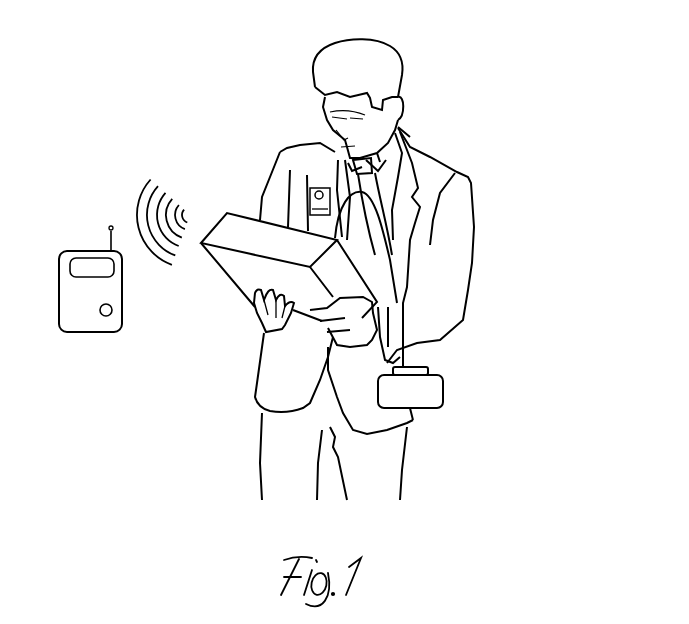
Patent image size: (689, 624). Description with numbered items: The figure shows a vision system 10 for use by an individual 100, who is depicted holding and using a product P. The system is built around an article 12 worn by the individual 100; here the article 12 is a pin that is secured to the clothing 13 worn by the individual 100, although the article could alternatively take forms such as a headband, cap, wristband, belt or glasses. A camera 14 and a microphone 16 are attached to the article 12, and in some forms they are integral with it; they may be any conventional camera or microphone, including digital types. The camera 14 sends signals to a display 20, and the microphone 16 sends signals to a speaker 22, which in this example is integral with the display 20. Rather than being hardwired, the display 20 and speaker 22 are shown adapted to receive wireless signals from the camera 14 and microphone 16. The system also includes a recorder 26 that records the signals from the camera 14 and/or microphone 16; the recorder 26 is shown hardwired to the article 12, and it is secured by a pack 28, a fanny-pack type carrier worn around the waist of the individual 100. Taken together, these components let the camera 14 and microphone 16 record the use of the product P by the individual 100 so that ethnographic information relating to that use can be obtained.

The vision system 10 is at (520, 148).
The individual 100 is at (363, 50).
The article 12 is at (310, 190).
The camera 14 is at (316, 189).
The microphone 16 is at (310, 209).
The clothing 13 is at (270, 370).
The product P is at (233, 271).
The display 20 is at (88, 266).
The speaker 22 is at (109, 318).
The recorder 26 is at (423, 367).
The pack 28 is at (435, 390).